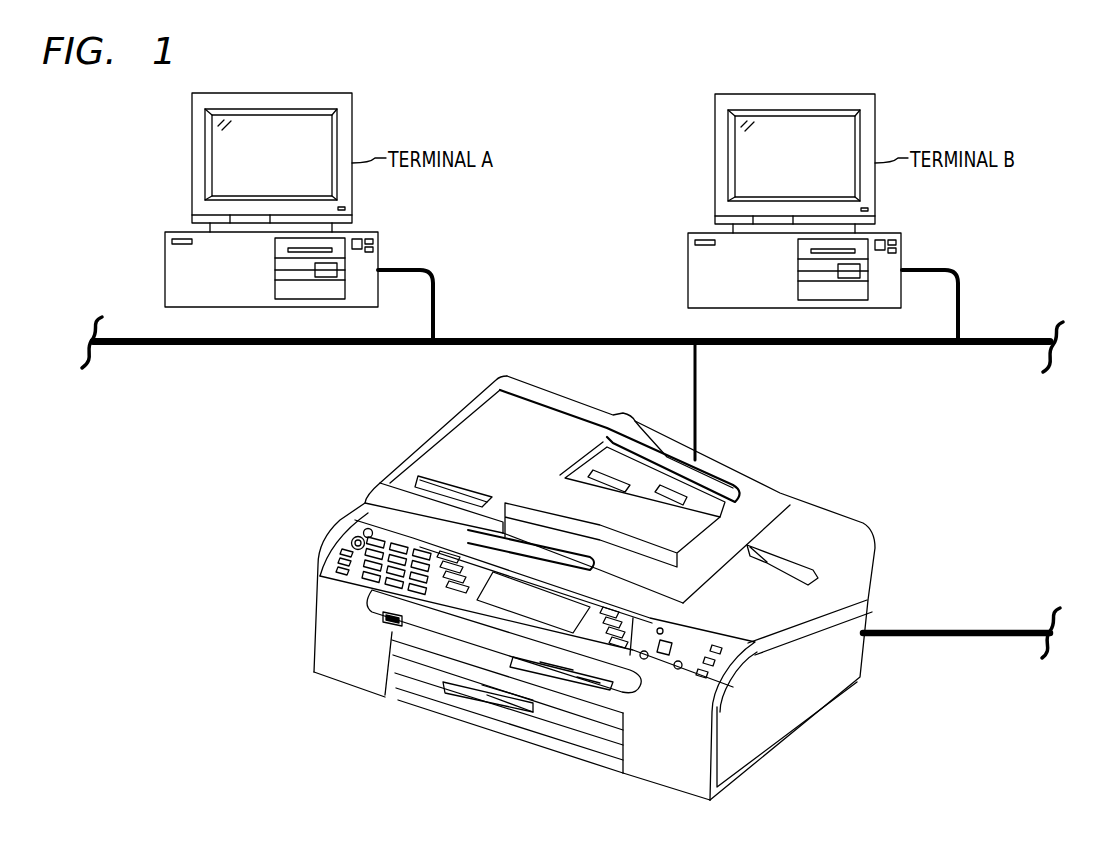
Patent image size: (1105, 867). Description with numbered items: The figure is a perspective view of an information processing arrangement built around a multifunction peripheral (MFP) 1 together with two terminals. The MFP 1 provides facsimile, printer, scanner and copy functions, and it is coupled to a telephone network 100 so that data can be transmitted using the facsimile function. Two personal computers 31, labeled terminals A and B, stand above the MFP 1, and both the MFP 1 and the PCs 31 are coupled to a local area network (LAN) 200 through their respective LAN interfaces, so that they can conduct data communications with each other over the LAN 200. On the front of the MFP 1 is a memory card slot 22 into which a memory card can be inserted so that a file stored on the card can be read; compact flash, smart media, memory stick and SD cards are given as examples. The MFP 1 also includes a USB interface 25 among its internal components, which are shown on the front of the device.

The multifunction peripheral (MFP) 1 is at (556, 589).
The memory card slot 22 is at (557, 677).
The USB interface 25 is at (388, 623).
The personal computer (PC) 31 is at (385, 100).
The telephone network 100 is at (980, 625).
The local area network (LAN) 200 is at (537, 335).